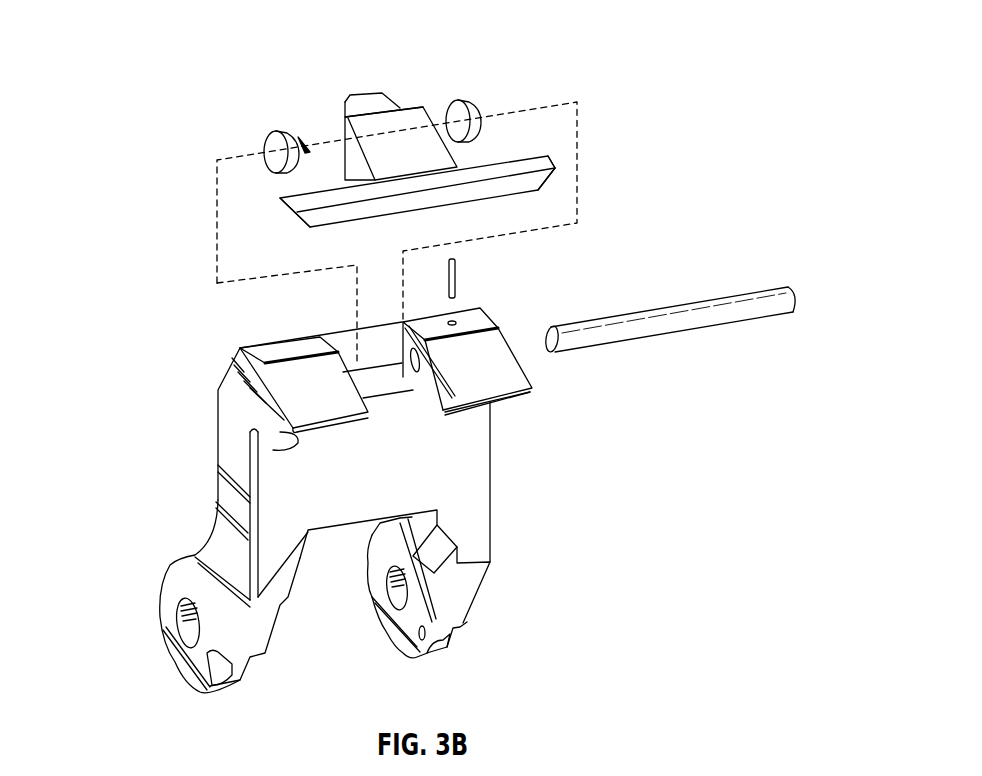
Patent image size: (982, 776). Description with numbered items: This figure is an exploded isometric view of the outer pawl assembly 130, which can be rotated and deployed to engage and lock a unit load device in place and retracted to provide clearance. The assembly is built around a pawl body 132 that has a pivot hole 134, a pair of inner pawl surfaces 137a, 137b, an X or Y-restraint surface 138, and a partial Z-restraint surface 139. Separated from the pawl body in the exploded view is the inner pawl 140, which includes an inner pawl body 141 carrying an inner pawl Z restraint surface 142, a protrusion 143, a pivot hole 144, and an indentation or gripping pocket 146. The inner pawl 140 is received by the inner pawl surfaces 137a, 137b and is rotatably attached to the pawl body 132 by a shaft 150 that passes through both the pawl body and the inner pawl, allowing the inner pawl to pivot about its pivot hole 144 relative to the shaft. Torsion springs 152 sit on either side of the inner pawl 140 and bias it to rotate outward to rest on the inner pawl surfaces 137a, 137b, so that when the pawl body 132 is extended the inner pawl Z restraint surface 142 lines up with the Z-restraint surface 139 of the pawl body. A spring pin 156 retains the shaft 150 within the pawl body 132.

The outer pawl assembly 130 is at (742, 53).
The pawl body 132 is at (460, 465).
The pivot hole 134 is at (197, 628).
The inner pawl surface 137a is at (273, 450).
The inner pawl surface 137b is at (532, 392).
The X or Y-restraint surface 138 is at (460, 503).
The partial Z-restraint surface 139 is at (467, 408).
The inner pawl 140 is at (400, 117).
The inner pawl body 141 is at (457, 163).
The inner pawl Z restraint surface 142 is at (550, 183).
The protrusion 143 is at (303, 228).
The pivot hole 144 is at (368, 95).
The indentation/gripping pocket 146 is at (417, 183).
The shaft 150 is at (678, 318).
The torsion springs 152 is at (280, 128).
The spring pin 156 is at (456, 278).